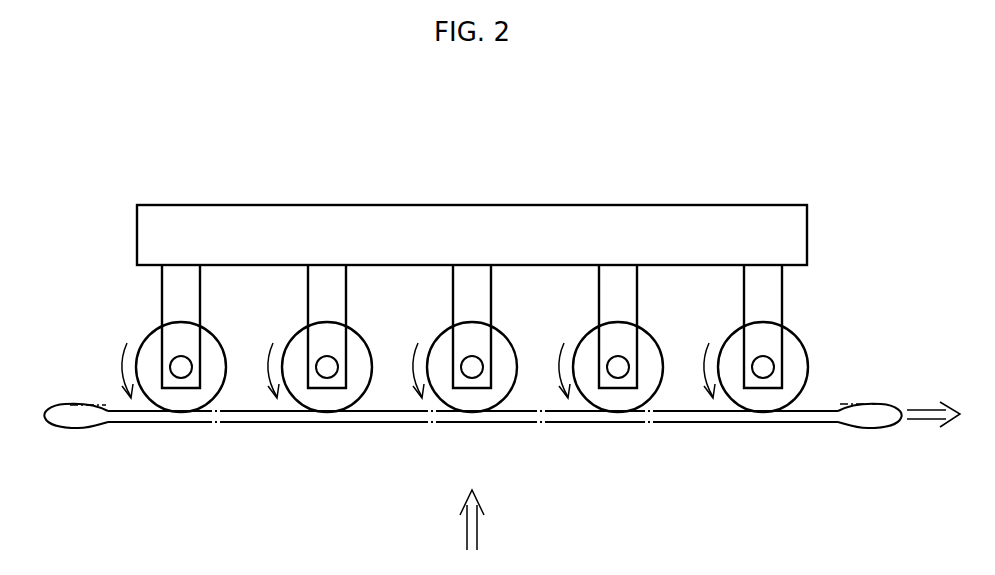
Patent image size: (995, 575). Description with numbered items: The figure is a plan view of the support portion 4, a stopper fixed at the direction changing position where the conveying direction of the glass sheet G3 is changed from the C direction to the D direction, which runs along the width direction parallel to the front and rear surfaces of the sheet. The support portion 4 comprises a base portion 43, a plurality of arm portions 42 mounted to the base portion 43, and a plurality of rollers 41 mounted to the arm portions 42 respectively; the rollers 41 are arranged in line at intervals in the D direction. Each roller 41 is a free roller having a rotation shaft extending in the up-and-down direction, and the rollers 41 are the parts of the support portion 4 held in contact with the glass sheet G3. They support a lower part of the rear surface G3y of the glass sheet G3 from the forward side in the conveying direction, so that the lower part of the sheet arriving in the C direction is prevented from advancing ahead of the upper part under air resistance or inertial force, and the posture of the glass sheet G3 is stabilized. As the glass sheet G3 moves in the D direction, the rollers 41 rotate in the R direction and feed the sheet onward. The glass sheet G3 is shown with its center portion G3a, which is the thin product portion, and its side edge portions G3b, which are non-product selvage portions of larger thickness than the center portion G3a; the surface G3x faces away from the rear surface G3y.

The support portion 4 is at (553, 186).
The base portion 43 is at (472, 222).
The arm portions 42 is at (171, 291).
The rollers 41 is at (216, 344).
The R direction R is at (408, 370).
The glass sheet G3 is at (352, 427).
The center portion G3a is at (493, 418).
The side edge portions G3b is at (73, 418).
The first region of glass film G3x is at (627, 423).
The rear surface G3y is at (690, 404).
The D direction D is at (926, 423).
The C direction C is at (479, 527).